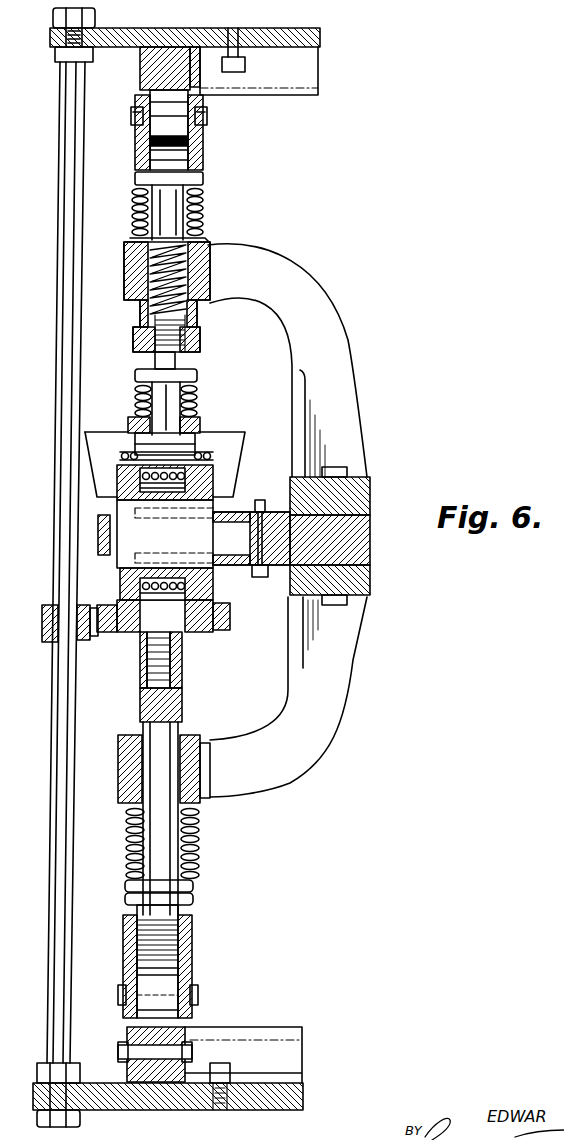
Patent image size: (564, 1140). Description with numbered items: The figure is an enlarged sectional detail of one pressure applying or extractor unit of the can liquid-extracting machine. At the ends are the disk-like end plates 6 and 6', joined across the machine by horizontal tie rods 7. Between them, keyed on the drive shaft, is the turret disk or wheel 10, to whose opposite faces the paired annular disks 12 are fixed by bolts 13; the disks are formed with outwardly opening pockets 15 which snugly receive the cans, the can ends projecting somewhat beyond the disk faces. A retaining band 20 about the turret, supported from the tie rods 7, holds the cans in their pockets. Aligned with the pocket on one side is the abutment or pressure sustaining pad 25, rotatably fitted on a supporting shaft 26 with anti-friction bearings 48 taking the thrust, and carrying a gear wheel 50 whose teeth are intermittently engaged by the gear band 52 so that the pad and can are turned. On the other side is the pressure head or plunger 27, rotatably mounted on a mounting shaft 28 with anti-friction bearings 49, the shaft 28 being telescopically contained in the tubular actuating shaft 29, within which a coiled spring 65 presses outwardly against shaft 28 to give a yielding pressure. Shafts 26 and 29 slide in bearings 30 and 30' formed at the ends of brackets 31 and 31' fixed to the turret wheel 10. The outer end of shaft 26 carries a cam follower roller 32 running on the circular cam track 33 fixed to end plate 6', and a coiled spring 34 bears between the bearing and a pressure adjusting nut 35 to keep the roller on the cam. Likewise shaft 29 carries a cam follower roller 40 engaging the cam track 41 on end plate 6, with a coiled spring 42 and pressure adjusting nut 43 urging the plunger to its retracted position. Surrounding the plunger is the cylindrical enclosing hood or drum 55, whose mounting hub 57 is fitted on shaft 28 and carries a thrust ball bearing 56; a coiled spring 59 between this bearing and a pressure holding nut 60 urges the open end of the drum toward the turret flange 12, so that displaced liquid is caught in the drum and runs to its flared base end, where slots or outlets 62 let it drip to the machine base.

The end plate 6 is at (203, 61).
The end plate 6' is at (185, 1093).
The tie rod 7 is at (55, 880).
The turret disk or wheel 10 is at (360, 537).
The annular disk 12 is at (230, 508).
The bolt 13 is at (263, 578).
The pocket 15 is at (200, 528).
The retaining band or housing 20 is at (98, 527).
The abutment or pressure sustaining pad or table 25 is at (118, 585).
The supporting shaft 26 is at (182, 706).
The pressure head or plunger 27 is at (234, 472).
The mounting shaft 28 is at (195, 404).
The actuating shaft 29 is at (195, 230).
The bearing 30 is at (193, 784).
The bearing 30' is at (71, 272).
The bracket 31 is at (304, 697).
The bracket 31' is at (291, 360).
The cam follower roller 32 is at (165, 988).
The cam track 33 is at (190, 1040).
The coiled spring 34 is at (197, 850).
The pressure adjusting nut 35 is at (195, 890).
The cam follower roller 40 is at (172, 116).
The cam track 41 is at (172, 73).
The coiled spring 42 is at (197, 203).
The pressure adjusting nut 43 is at (197, 178).
The anti-friction bearing 48 is at (182, 648).
The anti-friction bearing 49 is at (116, 478).
The gear wheel 50 is at (112, 633).
The gear band 52 is at (56, 645).
The enclosing hood or drum 55 is at (86, 445).
The thrust ball bearing 56 is at (202, 424).
The mounting hub 57 is at (196, 444).
The coiled spring 59 is at (195, 384).
The pressure holding nut 60 is at (176, 360).
The slot or outlet 62 is at (85, 430).
The coiled spring 65 is at (206, 280).